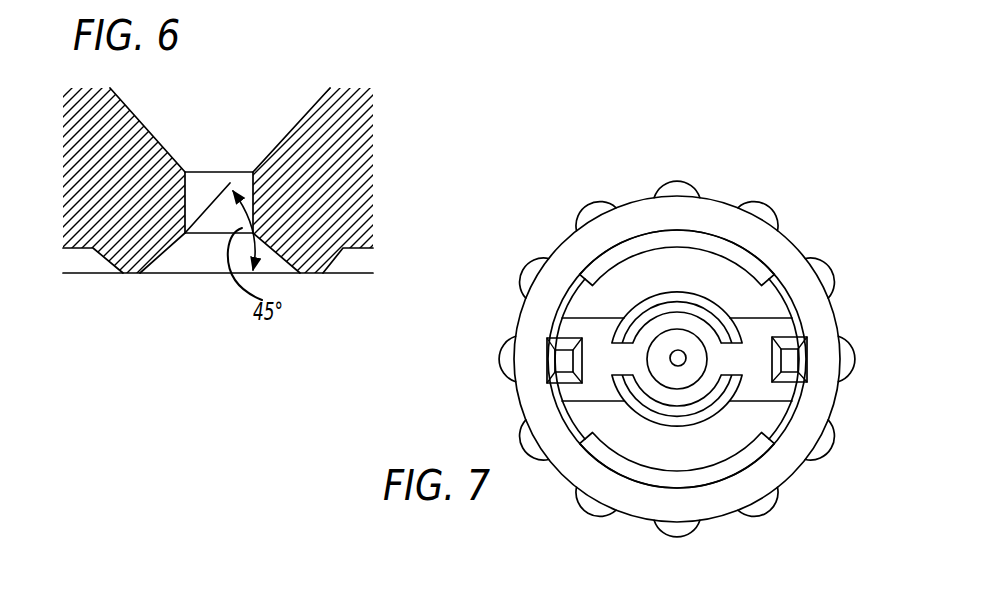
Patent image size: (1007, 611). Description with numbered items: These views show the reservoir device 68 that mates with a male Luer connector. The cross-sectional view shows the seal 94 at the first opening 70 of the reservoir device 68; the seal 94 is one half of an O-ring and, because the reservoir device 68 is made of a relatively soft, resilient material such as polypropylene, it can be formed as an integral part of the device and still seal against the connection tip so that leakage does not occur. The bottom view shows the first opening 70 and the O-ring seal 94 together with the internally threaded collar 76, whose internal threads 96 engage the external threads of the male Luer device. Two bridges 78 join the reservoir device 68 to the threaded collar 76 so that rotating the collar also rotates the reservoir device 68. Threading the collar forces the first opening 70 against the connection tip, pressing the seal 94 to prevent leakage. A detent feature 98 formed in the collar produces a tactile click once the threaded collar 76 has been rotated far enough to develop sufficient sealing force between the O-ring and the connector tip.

In FIG. 6, the reservoir device 68 is at (360, 126).
In FIG. 7, the reservoir device 68 is at (503, 402).
In FIG. 6, the first opening 70 is at (203, 235).
In FIG. 7, the first opening 70 is at (678, 357).
In FIG. 7, the threaded collar 76 is at (838, 318).
In FIG. 7, the bridges 78 is at (593, 318).
In FIG. 6, the seal 94 is at (133, 273).
In FIG. 7, the seal 94 is at (667, 375).
In FIG. 7, the internal threads 96 is at (757, 267).
In FIG. 7, the detent feature 98 is at (636, 246).